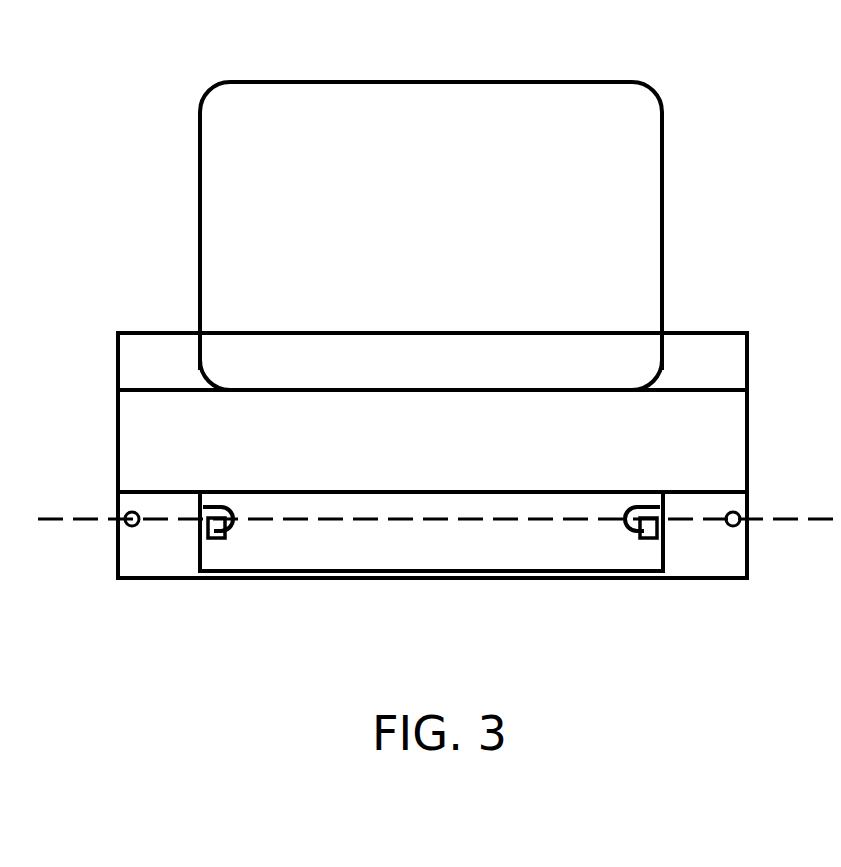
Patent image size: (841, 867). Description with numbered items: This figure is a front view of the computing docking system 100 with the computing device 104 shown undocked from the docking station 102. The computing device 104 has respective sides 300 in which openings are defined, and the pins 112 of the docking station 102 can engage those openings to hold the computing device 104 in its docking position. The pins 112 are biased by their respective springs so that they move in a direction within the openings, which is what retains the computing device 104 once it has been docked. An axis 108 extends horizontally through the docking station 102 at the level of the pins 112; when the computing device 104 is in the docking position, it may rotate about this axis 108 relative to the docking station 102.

The computing docking system 100 is at (86, 156).
The docking station 102 is at (158, 572).
The computing device 104 is at (200, 107).
The axis 108 is at (80, 521).
The pins 112 is at (226, 540).
The sides 300 is at (200, 258).